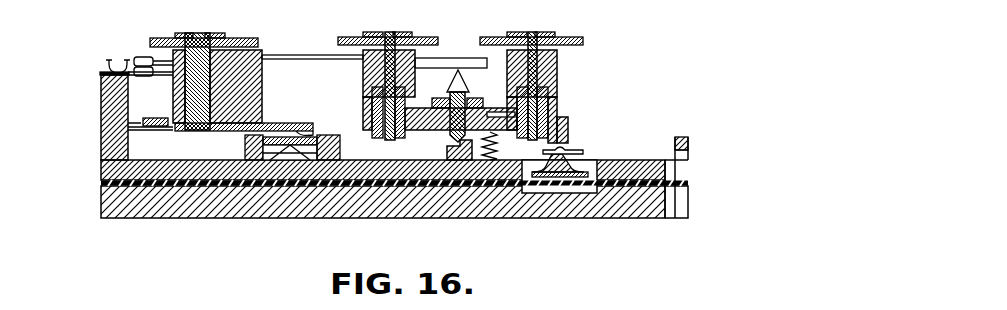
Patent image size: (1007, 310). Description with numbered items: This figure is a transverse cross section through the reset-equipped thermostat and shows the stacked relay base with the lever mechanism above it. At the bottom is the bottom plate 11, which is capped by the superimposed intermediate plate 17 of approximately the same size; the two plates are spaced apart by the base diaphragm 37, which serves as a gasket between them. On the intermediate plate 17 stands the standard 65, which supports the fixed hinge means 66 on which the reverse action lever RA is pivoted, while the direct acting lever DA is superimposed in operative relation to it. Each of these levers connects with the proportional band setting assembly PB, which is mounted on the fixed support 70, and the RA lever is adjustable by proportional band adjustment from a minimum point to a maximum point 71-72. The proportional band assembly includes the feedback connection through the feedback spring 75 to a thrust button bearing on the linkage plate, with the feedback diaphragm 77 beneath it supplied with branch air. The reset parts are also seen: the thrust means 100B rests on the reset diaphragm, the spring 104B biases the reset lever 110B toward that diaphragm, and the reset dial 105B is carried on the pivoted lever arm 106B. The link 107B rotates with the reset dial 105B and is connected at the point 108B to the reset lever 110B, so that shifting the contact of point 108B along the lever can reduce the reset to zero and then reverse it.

The bottom plate 11 is at (118, 199).
The intermediate plate 17 is at (118, 163).
The base diaphragm 37 is at (101, 182).
The standard 65 is at (100, 74).
The fixed hinge means 66 is at (129, 60).
The fixed support 70 is at (455, 139).
The minimum and maximum points 71-72 is at (458, 74).
The feedback spring 75 is at (566, 153).
The feedback diaphragm 77 is at (592, 192).
The thrust means 100B is at (329, 146).
The spring 104B is at (552, 150).
The reset dial 105B is at (261, 40).
The pivoted lever arm 106B is at (171, 119).
The link 107B is at (274, 122).
The point 108B is at (317, 134).
The reset lever 110B is at (262, 149).
The reverse action lever RA is at (293, 55).
The direct acting lever DA is at (568, 32).
The proportional band setting assembly PB is at (557, 101).